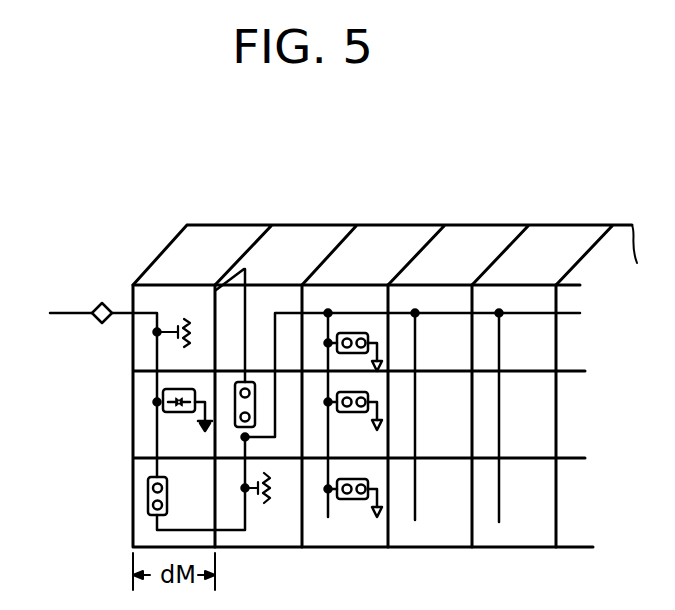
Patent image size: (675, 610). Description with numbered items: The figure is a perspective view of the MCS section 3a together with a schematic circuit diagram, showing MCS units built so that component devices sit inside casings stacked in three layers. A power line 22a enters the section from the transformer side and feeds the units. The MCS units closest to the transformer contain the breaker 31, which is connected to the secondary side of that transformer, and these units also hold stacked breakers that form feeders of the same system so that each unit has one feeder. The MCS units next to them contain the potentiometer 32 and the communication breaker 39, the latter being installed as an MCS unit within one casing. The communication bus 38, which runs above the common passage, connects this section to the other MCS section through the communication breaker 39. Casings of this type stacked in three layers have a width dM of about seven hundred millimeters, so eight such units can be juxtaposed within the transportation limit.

The MCS section 3a is at (552, 237).
The power supply line 22a is at (68, 313).
The breaker 31 is at (147, 495).
The potentiometer 32 is at (268, 506).
The communication bus 38 is at (218, 293).
The communication breaker 39 is at (248, 382).